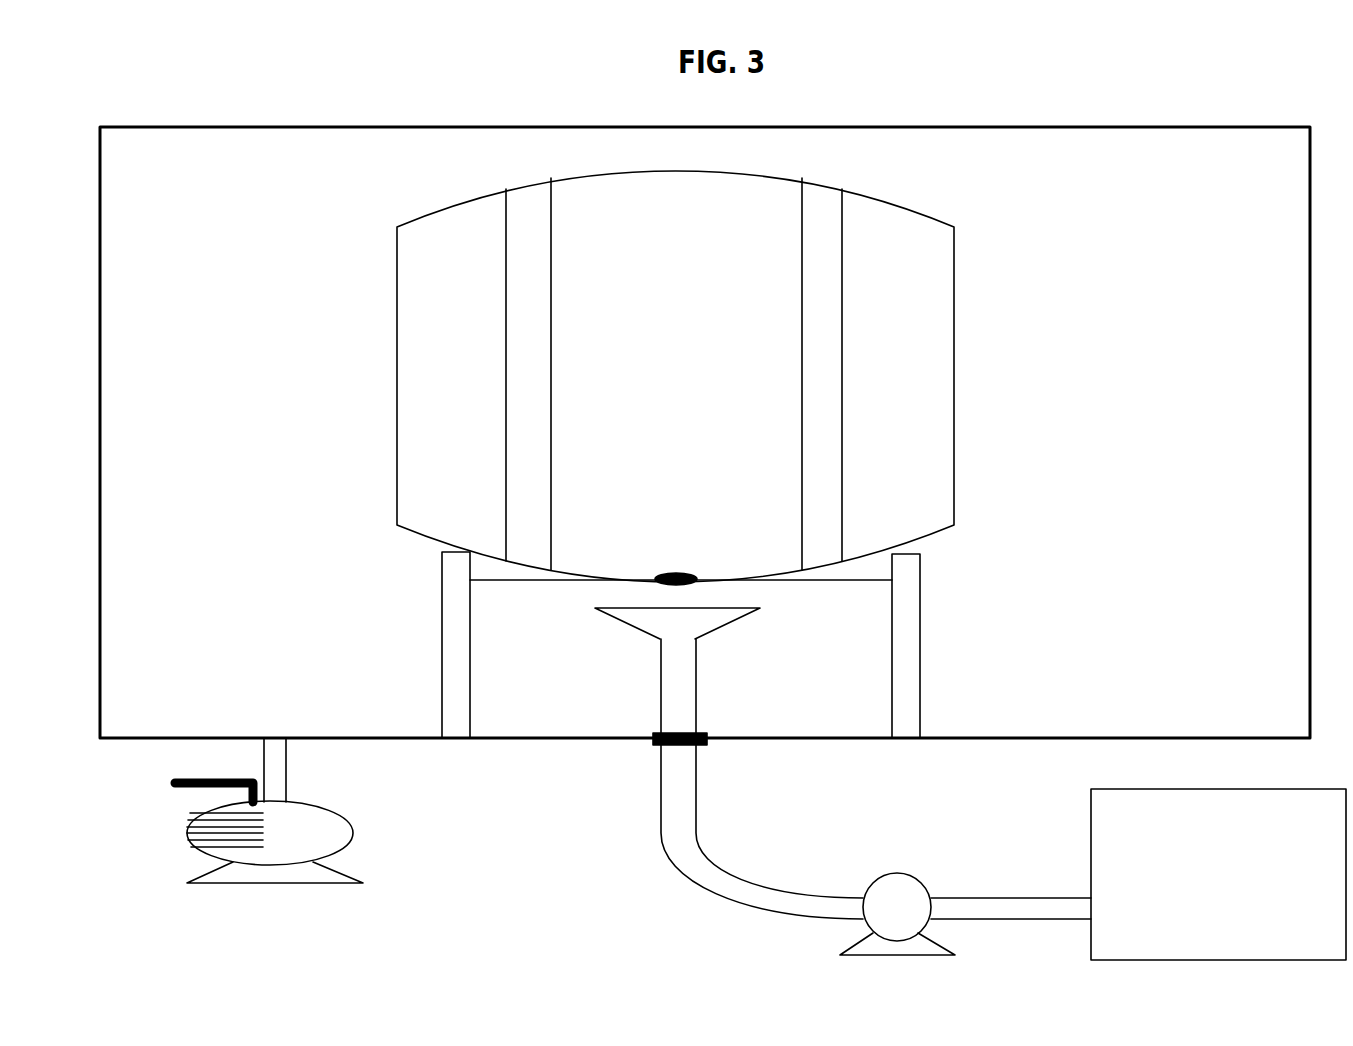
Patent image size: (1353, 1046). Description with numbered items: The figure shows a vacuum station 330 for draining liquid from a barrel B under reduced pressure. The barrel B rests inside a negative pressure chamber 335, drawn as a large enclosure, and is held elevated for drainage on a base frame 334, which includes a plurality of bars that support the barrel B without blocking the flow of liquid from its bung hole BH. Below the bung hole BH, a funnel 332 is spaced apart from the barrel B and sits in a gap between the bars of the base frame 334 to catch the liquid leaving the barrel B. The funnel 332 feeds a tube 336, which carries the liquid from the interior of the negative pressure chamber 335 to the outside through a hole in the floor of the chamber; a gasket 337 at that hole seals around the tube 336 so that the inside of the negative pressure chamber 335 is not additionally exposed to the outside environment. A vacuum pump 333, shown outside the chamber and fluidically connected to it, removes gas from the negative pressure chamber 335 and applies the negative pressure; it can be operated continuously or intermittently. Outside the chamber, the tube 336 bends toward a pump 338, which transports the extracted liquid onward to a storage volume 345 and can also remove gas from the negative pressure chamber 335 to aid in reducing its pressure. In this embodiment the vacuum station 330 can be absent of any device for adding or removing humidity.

The vacuum station 330 is at (142, 88).
The negative pressure chamber 335 is at (198, 173).
The barrel B is at (471, 249).
The bung hole BH is at (697, 583).
The base frame 334 is at (448, 627).
The funnel 332 is at (650, 624).
The tube 336 is at (665, 783).
The gasket 337 is at (708, 737).
The vacuum pump 333 is at (213, 828).
The pump 338 is at (893, 932).
The storage volume 345 is at (1135, 835).